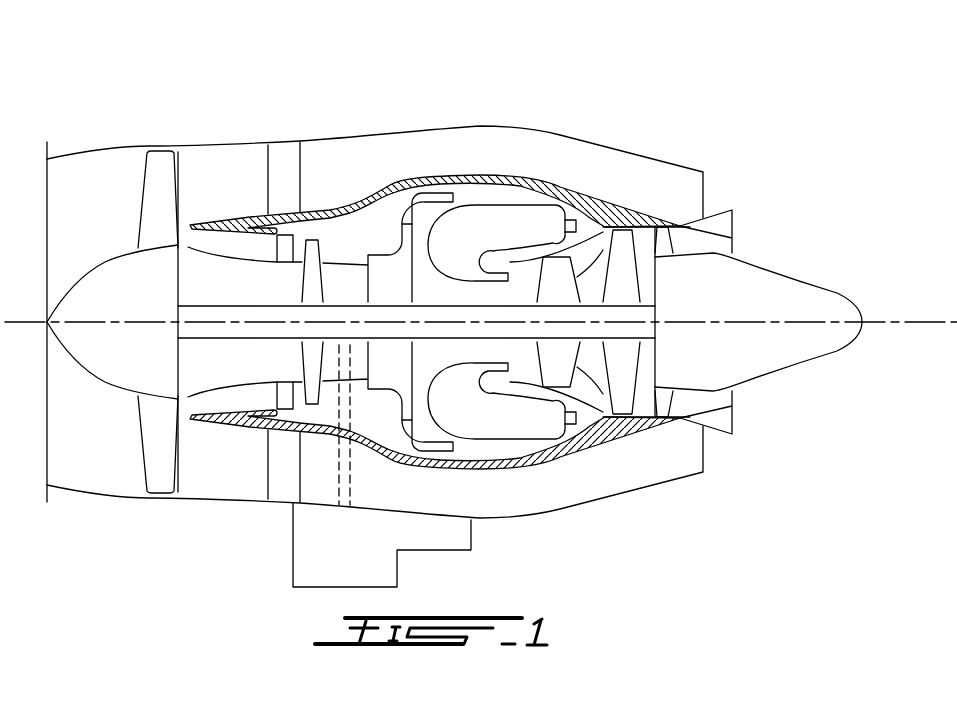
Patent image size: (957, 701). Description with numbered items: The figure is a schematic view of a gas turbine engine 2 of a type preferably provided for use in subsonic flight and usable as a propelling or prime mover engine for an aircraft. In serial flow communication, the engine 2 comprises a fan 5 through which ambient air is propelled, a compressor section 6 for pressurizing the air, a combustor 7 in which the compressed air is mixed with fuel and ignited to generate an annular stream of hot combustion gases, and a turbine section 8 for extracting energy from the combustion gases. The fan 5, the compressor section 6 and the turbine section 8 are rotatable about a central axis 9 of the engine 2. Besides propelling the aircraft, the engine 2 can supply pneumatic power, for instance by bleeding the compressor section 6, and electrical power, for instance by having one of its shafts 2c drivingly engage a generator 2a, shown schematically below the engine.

The gas turbine engine 2 is at (610, 103).
The generator 2a is at (350, 560).
The shaft 2c is at (230, 340).
The fan 5 is at (155, 433).
The compressor section 6 is at (338, 250).
The combustor 7 is at (495, 220).
The turbine section 8 is at (592, 370).
The central axis 9 is at (886, 320).